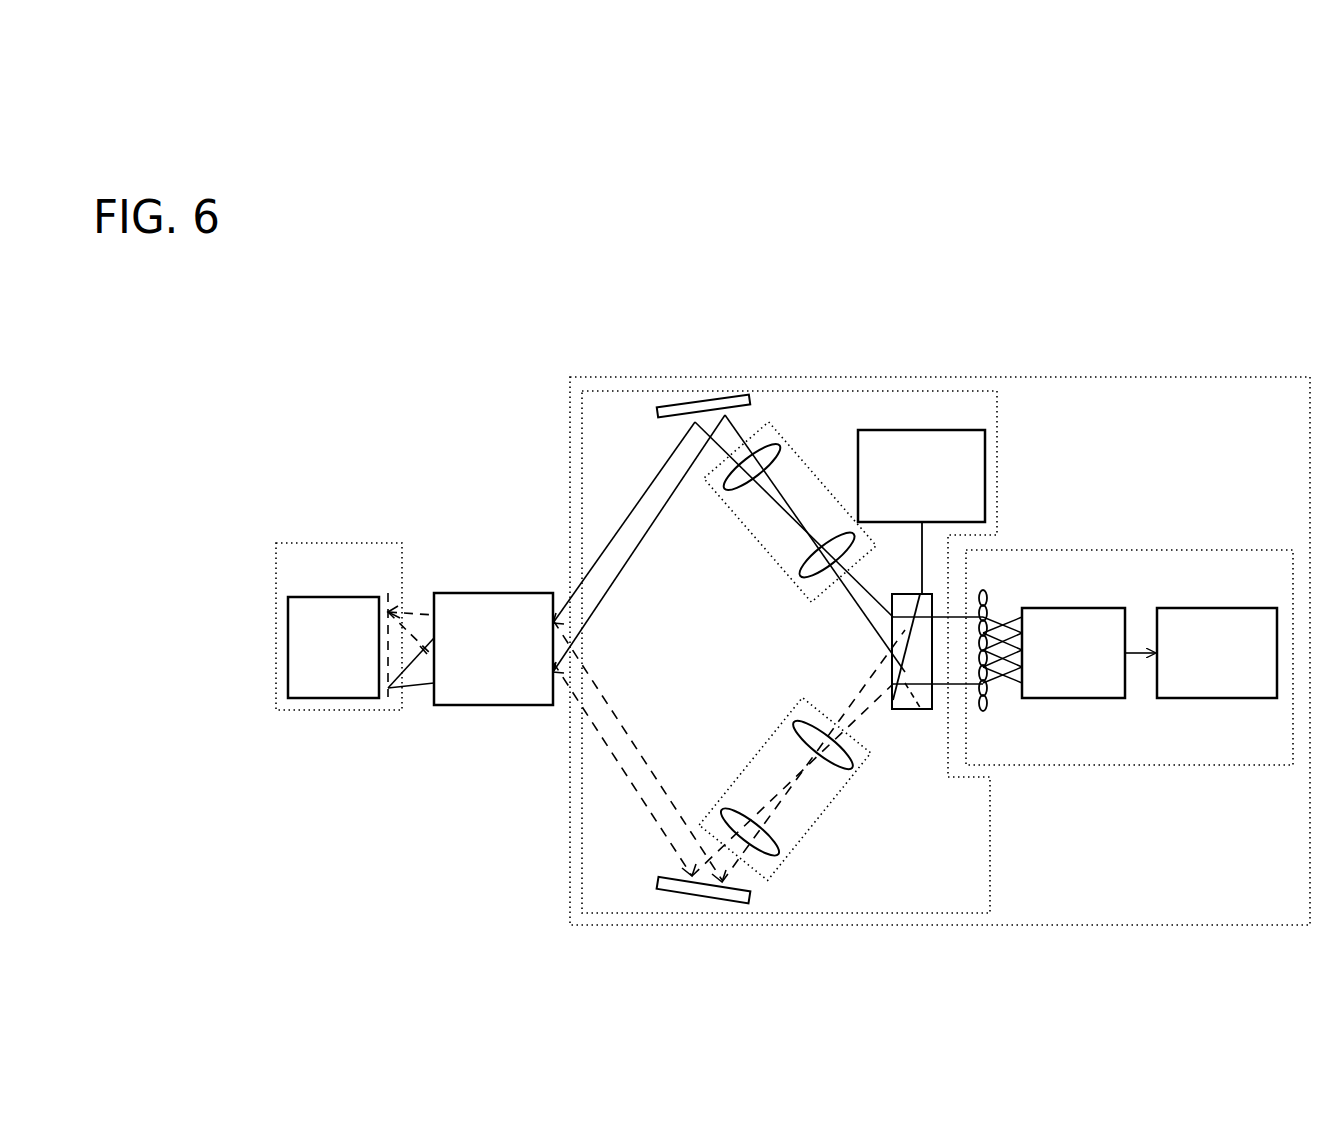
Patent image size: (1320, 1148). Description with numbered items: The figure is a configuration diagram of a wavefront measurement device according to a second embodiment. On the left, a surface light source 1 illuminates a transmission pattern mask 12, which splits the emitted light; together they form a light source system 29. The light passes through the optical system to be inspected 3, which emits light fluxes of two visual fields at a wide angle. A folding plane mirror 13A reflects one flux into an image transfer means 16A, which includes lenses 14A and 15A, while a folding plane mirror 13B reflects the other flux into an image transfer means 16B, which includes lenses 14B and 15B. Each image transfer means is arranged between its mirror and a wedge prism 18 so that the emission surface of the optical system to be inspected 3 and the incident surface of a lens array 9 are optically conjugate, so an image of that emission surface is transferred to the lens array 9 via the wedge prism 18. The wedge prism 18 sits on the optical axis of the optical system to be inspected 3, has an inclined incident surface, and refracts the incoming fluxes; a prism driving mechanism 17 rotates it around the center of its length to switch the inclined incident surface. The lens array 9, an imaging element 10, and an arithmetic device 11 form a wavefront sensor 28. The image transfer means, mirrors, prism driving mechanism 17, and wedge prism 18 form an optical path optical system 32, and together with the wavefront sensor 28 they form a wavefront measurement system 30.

The surface light source 1 is at (323, 597).
The optical system to be inspected 3 is at (506, 593).
The lens array 9 is at (985, 594).
The imaging element 10 is at (1075, 608).
The arithmetic device 11 is at (1208, 608).
The transmission pattern mask 12 is at (381, 599).
The folding plane mirror 13A is at (659, 417).
The folding plane mirror 13B is at (657, 880).
The lens 14A is at (732, 487).
The lens 14B is at (724, 814).
The lens 15A is at (801, 584).
The lens 15B is at (796, 722).
The image transfer means 16A is at (820, 588).
The image transfer means 16B is at (823, 812).
The prism driving mechanism 17 is at (918, 430).
The wedge prism 18 is at (922, 710).
The wavefront sensor 28 is at (1165, 550).
The light source system 29 is at (348, 543).
The wavefront measurement system 30 is at (580, 400).
The optical path optical system 32 is at (876, 390).